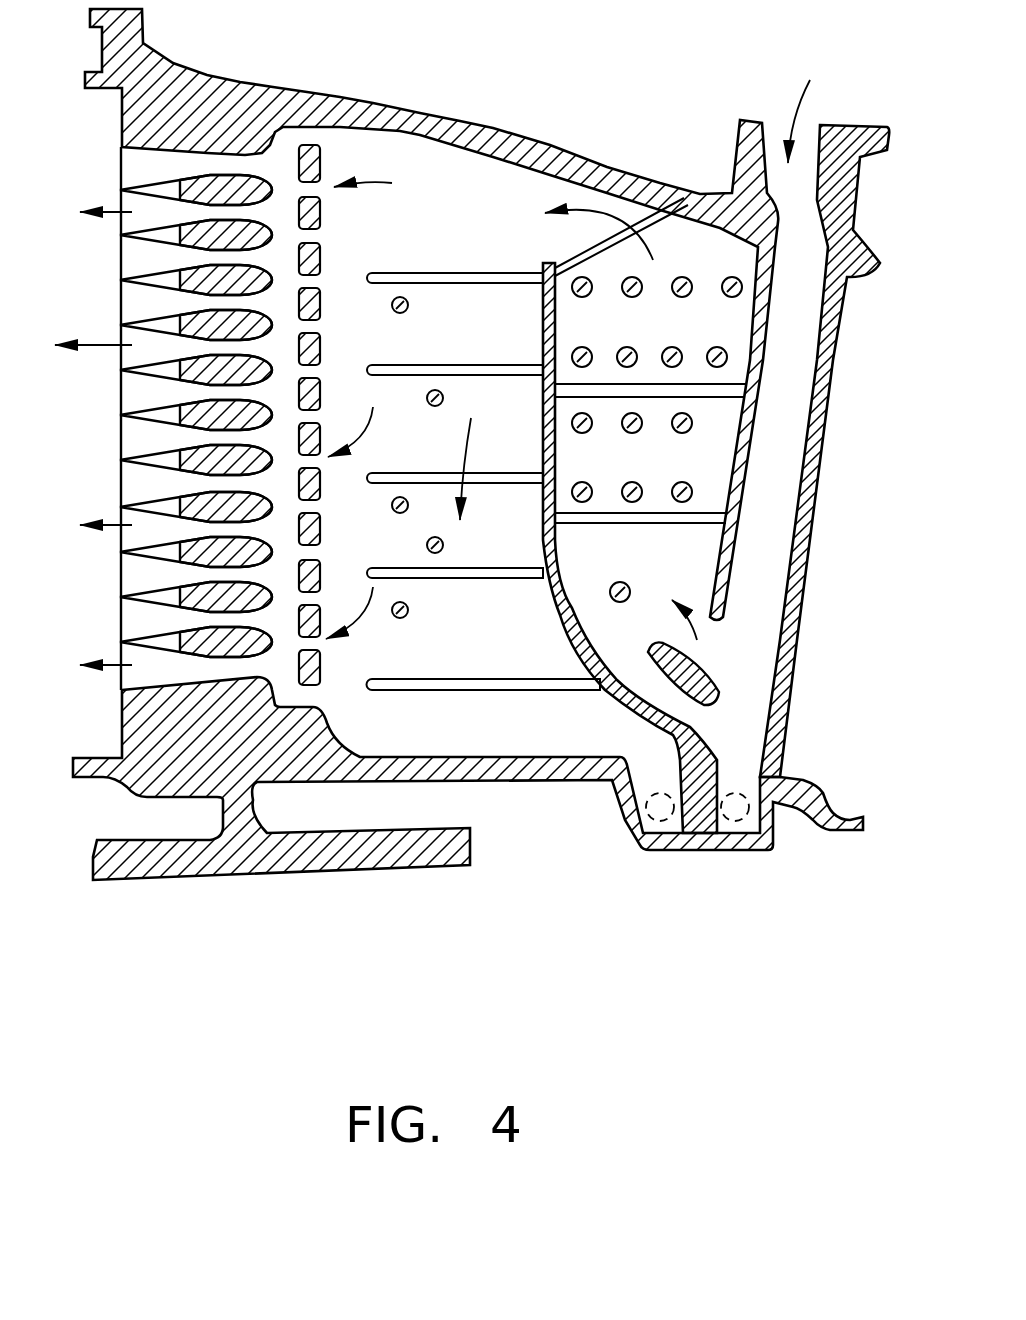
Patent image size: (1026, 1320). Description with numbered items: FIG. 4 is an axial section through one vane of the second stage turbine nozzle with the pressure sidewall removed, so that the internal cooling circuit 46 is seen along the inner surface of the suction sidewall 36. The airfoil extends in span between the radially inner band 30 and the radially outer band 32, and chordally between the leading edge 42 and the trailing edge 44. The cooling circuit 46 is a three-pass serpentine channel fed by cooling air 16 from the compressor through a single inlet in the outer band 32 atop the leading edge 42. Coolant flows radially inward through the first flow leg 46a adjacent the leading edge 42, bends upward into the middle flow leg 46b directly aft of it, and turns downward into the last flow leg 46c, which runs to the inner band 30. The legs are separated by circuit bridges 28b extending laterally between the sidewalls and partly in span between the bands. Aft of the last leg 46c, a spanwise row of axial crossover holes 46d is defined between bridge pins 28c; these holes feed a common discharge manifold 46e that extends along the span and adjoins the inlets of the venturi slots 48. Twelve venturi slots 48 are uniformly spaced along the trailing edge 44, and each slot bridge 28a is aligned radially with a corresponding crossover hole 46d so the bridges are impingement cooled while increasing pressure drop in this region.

The cooling air 16 is at (103, 347).
The slot bridge 28a is at (321, 160).
The circuit bridge 28b is at (717, 567).
The bridge pin 28c is at (320, 527).
The inner band 30 is at (515, 787).
The outer band 32 is at (510, 135).
The suction sidewall 36 is at (487, 660).
The leading edge 42 is at (815, 518).
The trailing edge 44 is at (118, 612).
The internal cooling circuit 46 is at (428, 172).
The first flow leg 46a is at (790, 518).
The middle flow leg 46b is at (664, 468).
The last flow leg 46c is at (491, 328).
The crossover holes 46d is at (322, 277).
The discharge manifold 46e is at (293, 333).
The venturi slots 48 is at (152, 300).